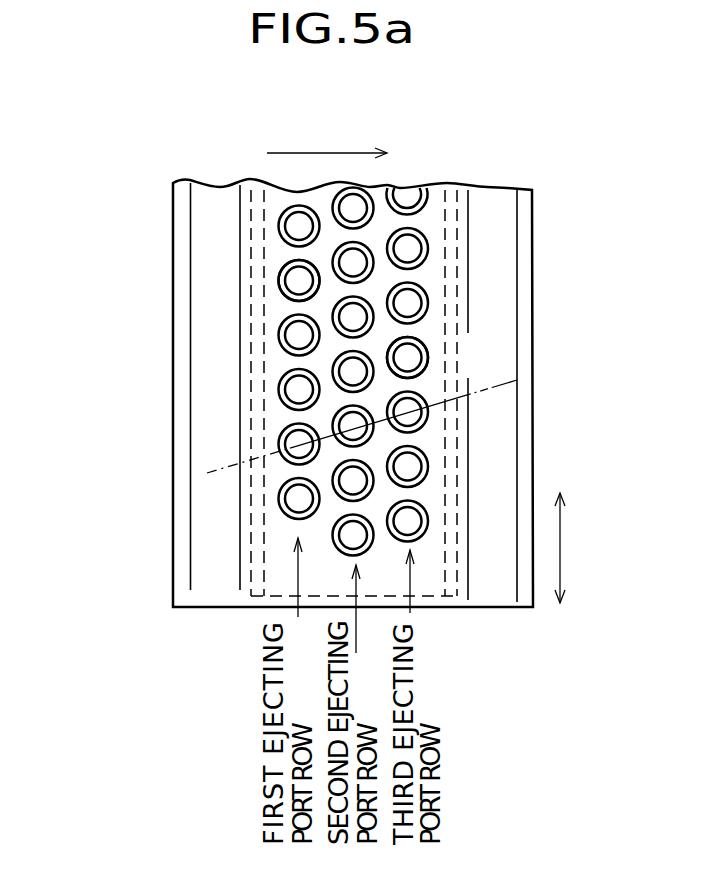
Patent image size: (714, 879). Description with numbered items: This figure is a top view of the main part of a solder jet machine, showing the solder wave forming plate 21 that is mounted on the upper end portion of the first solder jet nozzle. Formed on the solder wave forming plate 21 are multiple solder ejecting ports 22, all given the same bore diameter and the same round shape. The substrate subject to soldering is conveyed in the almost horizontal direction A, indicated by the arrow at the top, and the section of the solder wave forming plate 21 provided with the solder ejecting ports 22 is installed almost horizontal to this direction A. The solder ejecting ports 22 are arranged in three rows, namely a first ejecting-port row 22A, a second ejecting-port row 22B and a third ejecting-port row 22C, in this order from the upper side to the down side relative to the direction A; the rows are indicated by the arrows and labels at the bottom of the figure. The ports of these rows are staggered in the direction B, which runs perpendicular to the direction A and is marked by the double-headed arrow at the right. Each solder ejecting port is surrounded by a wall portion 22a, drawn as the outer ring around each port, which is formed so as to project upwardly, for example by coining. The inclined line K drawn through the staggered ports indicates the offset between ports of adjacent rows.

The solder wave forming plate 21 is at (207, 537).
The solder ejecting ports 22 is at (354, 372).
The first ejecting-port row 22A is at (298, 278).
The second ejecting-port row 22B is at (353, 266).
The third ejecting-port row 22C is at (407, 249).
The wall portion 22a is at (278, 284).
The inclined line through ejecting ports K is at (492, 388).
The direction A is at (327, 138).
The direction B is at (570, 548).